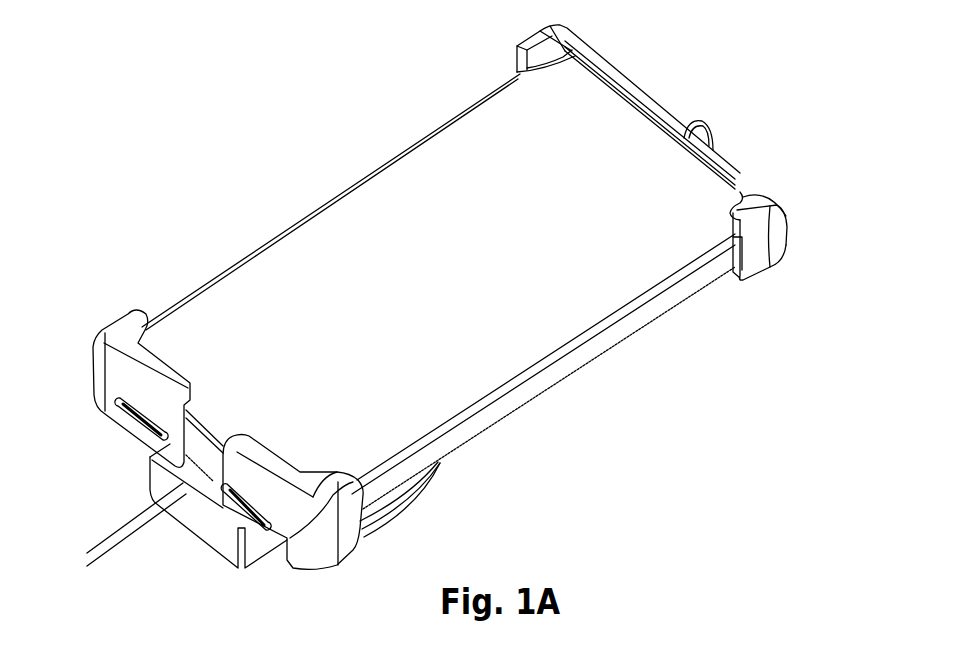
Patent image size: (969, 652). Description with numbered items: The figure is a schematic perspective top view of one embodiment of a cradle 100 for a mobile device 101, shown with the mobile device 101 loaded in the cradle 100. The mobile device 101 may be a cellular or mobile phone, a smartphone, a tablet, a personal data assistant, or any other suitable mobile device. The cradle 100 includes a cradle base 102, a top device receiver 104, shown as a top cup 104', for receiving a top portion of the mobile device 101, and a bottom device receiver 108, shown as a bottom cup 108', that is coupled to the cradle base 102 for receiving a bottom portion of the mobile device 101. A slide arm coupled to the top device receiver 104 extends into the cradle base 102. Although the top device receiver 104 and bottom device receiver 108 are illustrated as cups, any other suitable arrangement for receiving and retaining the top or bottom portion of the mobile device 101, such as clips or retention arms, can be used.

The cradle 100 is at (517, 53).
The mobile device 101 is at (293, 247).
The cradle base 102 is at (410, 508).
The top device receiver 104 is at (782, 264).
The top cup 104' is at (788, 229).
The bottom device receiver 108 is at (125, 373).
The bottom cup 108' is at (298, 522).